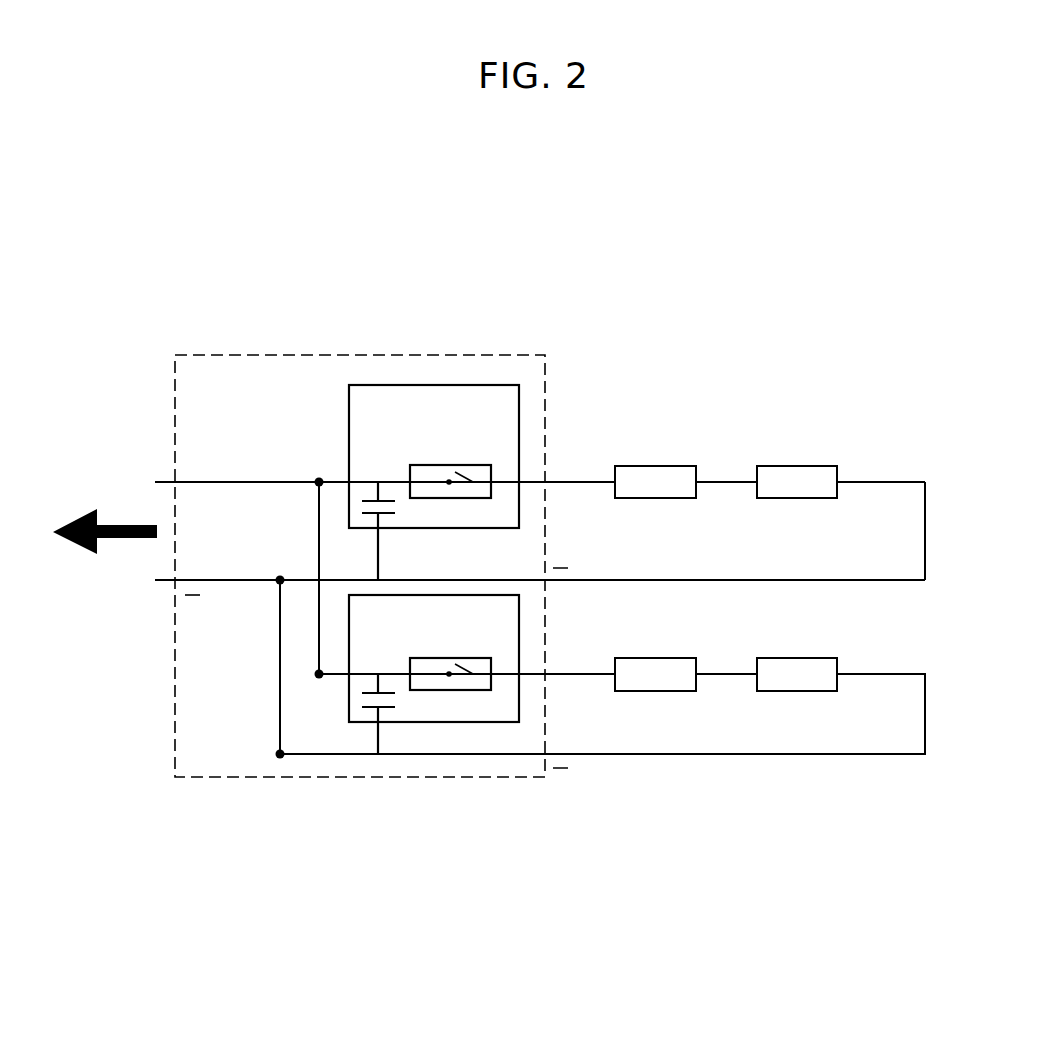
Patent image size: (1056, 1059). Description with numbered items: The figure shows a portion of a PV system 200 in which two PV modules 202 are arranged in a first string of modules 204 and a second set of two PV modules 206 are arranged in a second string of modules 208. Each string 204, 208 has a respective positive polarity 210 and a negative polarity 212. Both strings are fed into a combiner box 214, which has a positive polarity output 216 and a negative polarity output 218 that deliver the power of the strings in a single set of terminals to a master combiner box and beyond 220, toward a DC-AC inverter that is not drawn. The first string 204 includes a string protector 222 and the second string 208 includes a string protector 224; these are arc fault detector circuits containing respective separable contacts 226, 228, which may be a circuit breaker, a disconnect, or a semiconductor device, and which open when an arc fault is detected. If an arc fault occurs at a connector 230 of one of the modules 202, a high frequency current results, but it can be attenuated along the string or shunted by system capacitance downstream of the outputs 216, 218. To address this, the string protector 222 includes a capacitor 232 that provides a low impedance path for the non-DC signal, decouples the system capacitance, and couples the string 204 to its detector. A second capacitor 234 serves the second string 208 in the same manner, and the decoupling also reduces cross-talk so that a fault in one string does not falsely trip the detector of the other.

The PV system 200 is at (866, 248).
The PV modules 202 is at (642, 466).
The first string of modules 204 is at (912, 467).
The PV modules 206 is at (642, 658).
The second string of modules 208 is at (906, 657).
The positive polarity 210 is at (576, 507).
The negative polarity 212 is at (583, 562).
The combiner box 214 is at (545, 393).
The positive polarity output 216 is at (227, 482).
The negative polarity output 218 is at (215, 583).
The master combiner box and beyond 220 is at (137, 537).
The string protector 222 is at (478, 385).
The string protector 224 is at (435, 723).
The separable contacts 226 is at (437, 466).
The separable contacts 228 is at (423, 658).
The connector 230 is at (753, 486).
The capacitor 232 is at (363, 488).
The second capacitor 234 is at (360, 715).